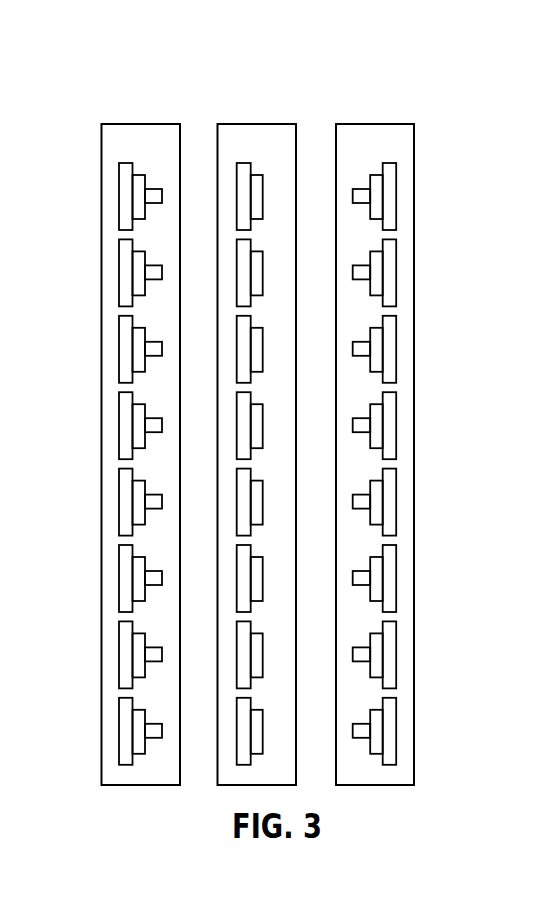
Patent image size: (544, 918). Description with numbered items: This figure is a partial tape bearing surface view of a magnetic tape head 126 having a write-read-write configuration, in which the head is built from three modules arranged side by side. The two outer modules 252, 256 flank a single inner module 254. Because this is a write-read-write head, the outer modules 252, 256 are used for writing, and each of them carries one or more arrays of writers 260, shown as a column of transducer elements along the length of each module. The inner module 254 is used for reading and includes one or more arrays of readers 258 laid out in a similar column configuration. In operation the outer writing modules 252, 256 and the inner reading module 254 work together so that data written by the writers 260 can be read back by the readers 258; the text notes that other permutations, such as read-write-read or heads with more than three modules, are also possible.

The tape head 126 is at (57, 84).
The outer module 252 is at (127, 96).
The inner module 254 is at (253, 96).
The outer module 256 is at (362, 96).
The readers 258 is at (263, 348).
The writers 260 is at (397, 422).